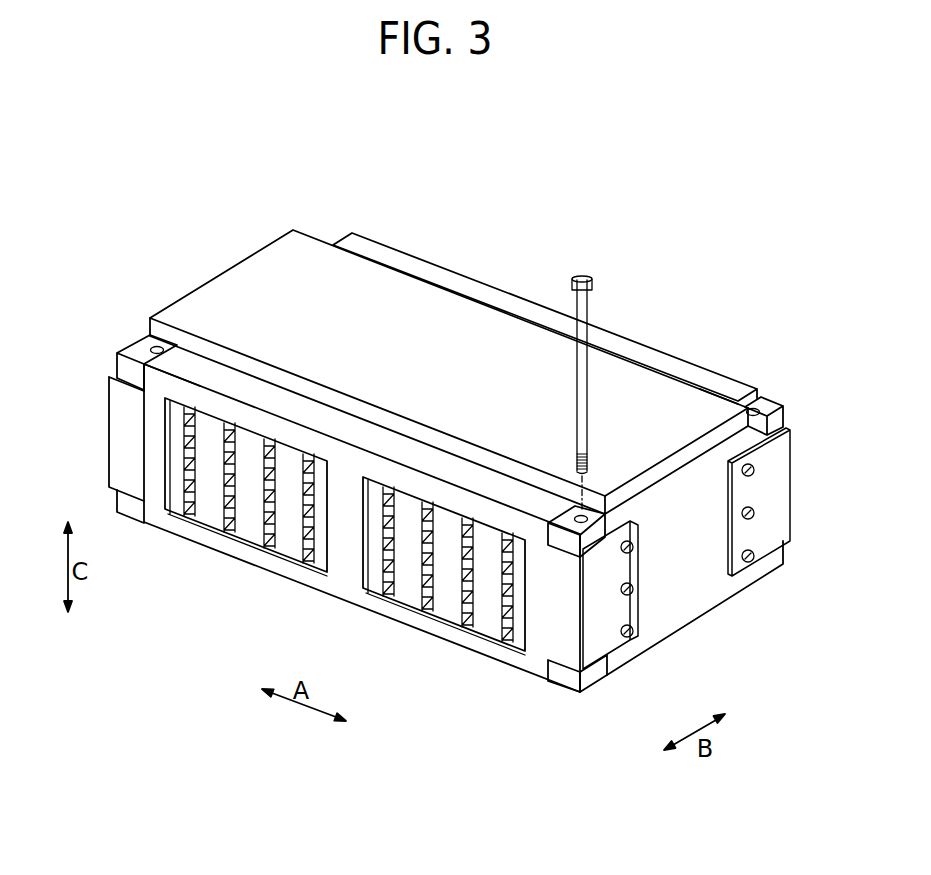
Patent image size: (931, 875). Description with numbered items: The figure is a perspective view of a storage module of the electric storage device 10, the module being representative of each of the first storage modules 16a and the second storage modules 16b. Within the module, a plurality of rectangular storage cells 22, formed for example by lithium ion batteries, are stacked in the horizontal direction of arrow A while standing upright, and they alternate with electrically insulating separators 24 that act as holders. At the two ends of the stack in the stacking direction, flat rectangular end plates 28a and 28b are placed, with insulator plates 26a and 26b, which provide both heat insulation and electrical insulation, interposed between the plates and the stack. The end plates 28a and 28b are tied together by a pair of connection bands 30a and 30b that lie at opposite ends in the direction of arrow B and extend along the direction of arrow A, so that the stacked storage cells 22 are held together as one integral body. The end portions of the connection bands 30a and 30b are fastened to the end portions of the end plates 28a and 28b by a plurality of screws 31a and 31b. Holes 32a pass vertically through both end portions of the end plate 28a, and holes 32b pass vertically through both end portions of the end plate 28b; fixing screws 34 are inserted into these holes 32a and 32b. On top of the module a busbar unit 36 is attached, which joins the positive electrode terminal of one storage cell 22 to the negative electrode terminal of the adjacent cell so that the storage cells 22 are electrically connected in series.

The cooling device (heat sink assembly) 10 is at (707, 250).
The first storage module 16a is at (545, 293).
The second storage module 16b is at (445, 253).
The storage cell 22 is at (292, 548).
The separator 24 is at (425, 587).
The insulator plate 26a is at (735, 392).
The insulator plate 26b is at (181, 369).
The end plate 28a is at (748, 558).
The end plate 28b is at (128, 344).
The connection band 30a is at (256, 572).
The connection band 30b is at (660, 346).
The screw 31a is at (628, 638).
The screw 31b is at (749, 562).
The hole 32a is at (758, 405).
The hole 32b is at (157, 345).
The fixing screw 34 is at (583, 276).
The busbar unit 36 is at (278, 249).